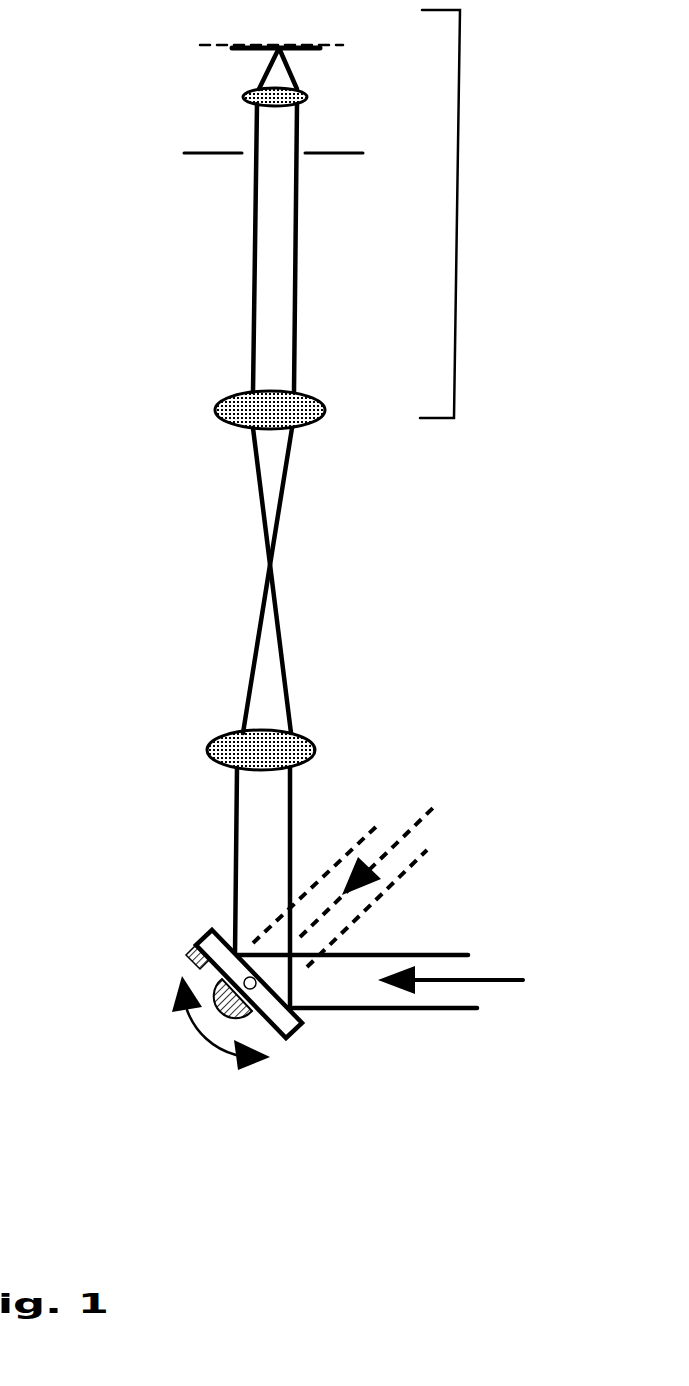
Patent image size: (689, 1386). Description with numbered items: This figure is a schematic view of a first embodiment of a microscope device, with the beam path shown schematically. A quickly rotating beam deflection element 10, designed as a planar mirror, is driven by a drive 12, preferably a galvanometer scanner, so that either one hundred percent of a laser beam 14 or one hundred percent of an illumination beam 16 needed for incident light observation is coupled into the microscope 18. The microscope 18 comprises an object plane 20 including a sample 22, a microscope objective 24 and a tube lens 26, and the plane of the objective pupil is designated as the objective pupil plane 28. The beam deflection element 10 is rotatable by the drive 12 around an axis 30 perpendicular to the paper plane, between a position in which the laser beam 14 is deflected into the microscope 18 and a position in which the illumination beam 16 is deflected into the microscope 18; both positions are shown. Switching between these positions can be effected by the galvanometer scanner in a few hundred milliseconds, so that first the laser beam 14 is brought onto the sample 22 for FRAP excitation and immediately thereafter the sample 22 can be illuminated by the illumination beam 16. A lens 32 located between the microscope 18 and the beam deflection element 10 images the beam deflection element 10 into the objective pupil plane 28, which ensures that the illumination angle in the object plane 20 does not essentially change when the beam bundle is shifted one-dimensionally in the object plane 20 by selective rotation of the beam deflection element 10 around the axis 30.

The beam deflection element 10 is at (203, 935).
The drive 12 is at (200, 1037).
The laser beam 14 is at (403, 981).
The illumination beam 16 is at (367, 877).
The microscope 18 is at (466, 214).
The object plane 20 is at (196, 45).
The sample 22 is at (282, 48).
The microscope objective 24 is at (317, 97).
The tube lens 26 is at (333, 410).
The objective pupil plane 28 is at (180, 152).
The axis 30 is at (203, 962).
The lens 32 is at (325, 748).